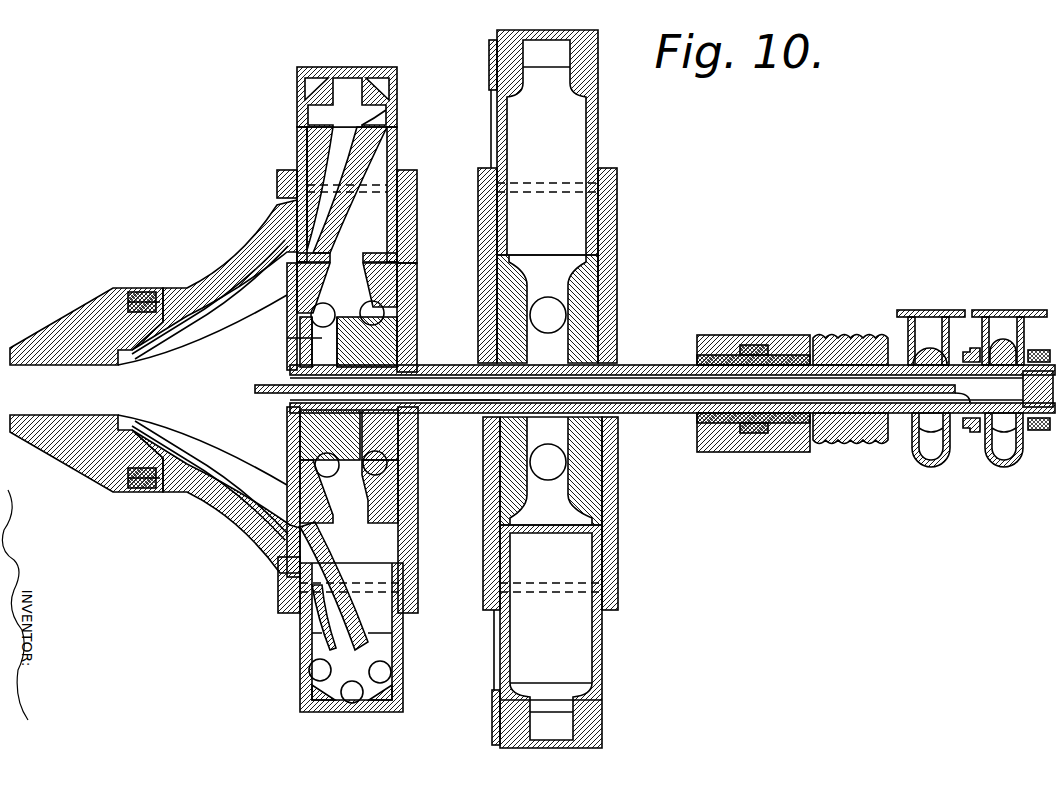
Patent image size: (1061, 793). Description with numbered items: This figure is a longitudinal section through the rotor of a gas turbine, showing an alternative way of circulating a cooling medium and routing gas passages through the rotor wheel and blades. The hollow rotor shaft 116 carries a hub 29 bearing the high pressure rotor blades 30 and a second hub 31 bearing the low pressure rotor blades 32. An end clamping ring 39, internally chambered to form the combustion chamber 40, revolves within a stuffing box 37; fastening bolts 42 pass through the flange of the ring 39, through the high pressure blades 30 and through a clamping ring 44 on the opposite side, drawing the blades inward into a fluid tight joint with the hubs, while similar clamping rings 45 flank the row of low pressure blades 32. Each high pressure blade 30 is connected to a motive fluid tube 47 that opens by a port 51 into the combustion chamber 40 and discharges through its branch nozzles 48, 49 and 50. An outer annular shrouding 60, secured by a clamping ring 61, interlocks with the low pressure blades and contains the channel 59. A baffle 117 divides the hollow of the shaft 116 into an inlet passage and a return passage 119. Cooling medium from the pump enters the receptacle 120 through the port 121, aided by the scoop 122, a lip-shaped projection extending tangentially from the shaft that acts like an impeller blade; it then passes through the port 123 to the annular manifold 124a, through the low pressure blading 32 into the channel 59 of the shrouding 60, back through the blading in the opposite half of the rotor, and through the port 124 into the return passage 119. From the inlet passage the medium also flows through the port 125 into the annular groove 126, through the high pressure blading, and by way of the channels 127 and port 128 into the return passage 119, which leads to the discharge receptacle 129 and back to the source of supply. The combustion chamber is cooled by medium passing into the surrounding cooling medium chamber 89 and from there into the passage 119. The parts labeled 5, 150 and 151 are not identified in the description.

The threaded coupling block 5 is at (768, 452).
The hub 29 is at (400, 338).
The high pressure rotor blades 30 is at (390, 116).
The hub 31 is at (600, 340).
The low pressure rotor blades 32 is at (600, 118).
The stuffing boxes 37 is at (150, 488).
The end clamping ring 39 is at (220, 508).
The combustion chamber 40 is at (118, 390).
The fastening bolts 42 is at (279, 182).
The clamping ring 44 is at (410, 292).
The clamping ring 45 is at (478, 231).
The motive fluid tube 47 is at (360, 166).
The discharge nozzle 48 is at (346, 92).
The discharge nozzle 49 is at (300, 119).
The discharge nozzle 50 is at (396, 104).
The ports 51 is at (282, 222).
The channel 59 is at (585, 722).
The outer annular shrouding 60 is at (604, 738).
The clamping ring 61 is at (492, 716).
The cooling medium chamber 89 is at (235, 262).
The rotor shaft 116 is at (672, 368).
The baffle 117 is at (482, 405).
The outlet passage 119 is at (640, 405).
The receptacle 120 is at (1002, 455).
The port 121 is at (960, 345).
The scoop 122 is at (1003, 350).
The port 123 is at (560, 335).
The port 124 is at (505, 425).
The annular groove 124a is at (548, 485).
The port 125 is at (288, 340).
The annular groove 126 is at (325, 314).
The channels 127 is at (374, 466).
The port 128 is at (365, 436).
The discharge receptacle 129 is at (928, 455).
The upper sleeve band 150 is at (292, 368).
The lower sleeve band 151 is at (272, 400).